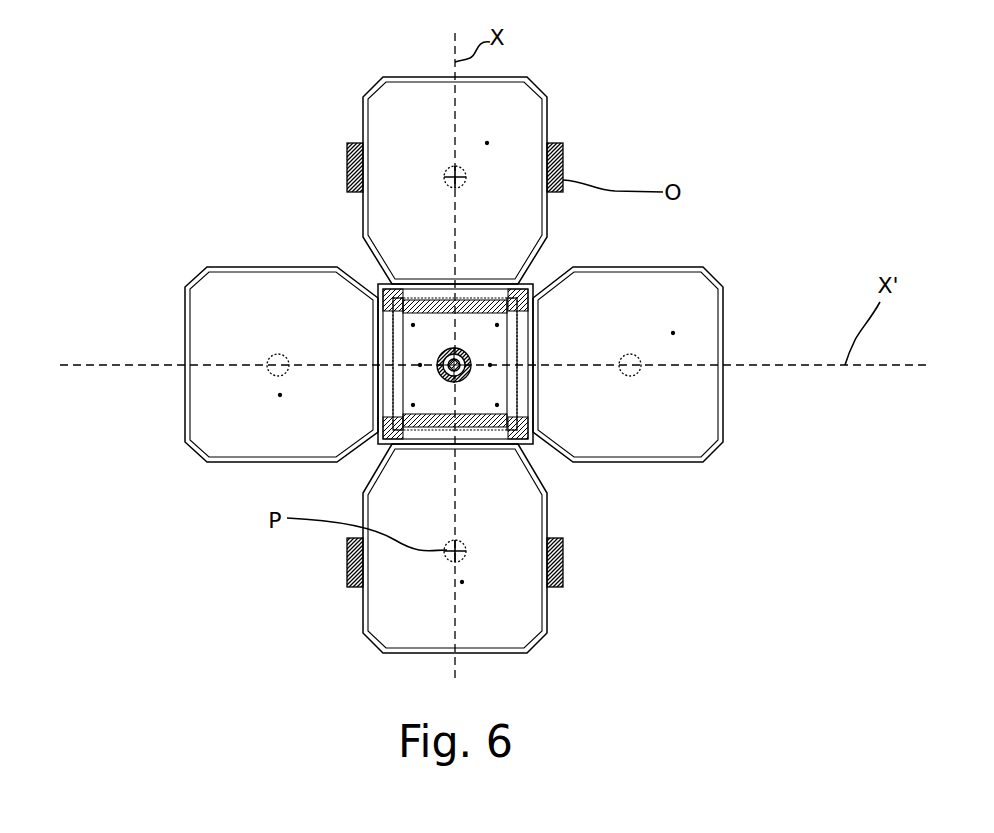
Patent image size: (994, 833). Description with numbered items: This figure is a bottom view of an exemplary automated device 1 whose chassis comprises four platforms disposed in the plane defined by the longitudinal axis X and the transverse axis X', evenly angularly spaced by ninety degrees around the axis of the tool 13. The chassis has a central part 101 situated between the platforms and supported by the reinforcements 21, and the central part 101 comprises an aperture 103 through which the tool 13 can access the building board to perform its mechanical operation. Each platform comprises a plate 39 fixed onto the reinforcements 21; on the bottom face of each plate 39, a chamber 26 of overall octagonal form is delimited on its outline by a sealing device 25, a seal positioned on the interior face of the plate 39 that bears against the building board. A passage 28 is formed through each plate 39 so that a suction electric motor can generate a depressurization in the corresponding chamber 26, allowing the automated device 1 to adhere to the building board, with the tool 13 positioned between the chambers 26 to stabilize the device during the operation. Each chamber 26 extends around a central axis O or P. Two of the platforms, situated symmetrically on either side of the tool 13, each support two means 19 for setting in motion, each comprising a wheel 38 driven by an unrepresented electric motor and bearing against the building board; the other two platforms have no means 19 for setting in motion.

The automated device 1 is at (150, 158).
The tool 13 is at (445, 365).
The means for setting in motion 19 is at (580, 158).
The reinforcements 21 is at (385, 292).
The sealing device 25 is at (432, 77).
The chamber 26 is at (487, 143).
The passage 28 is at (444, 176).
The wheel 38 is at (347, 182).
The plate 39 is at (395, 113).
The central part 101 is at (492, 401).
The aperture 103 is at (473, 352).